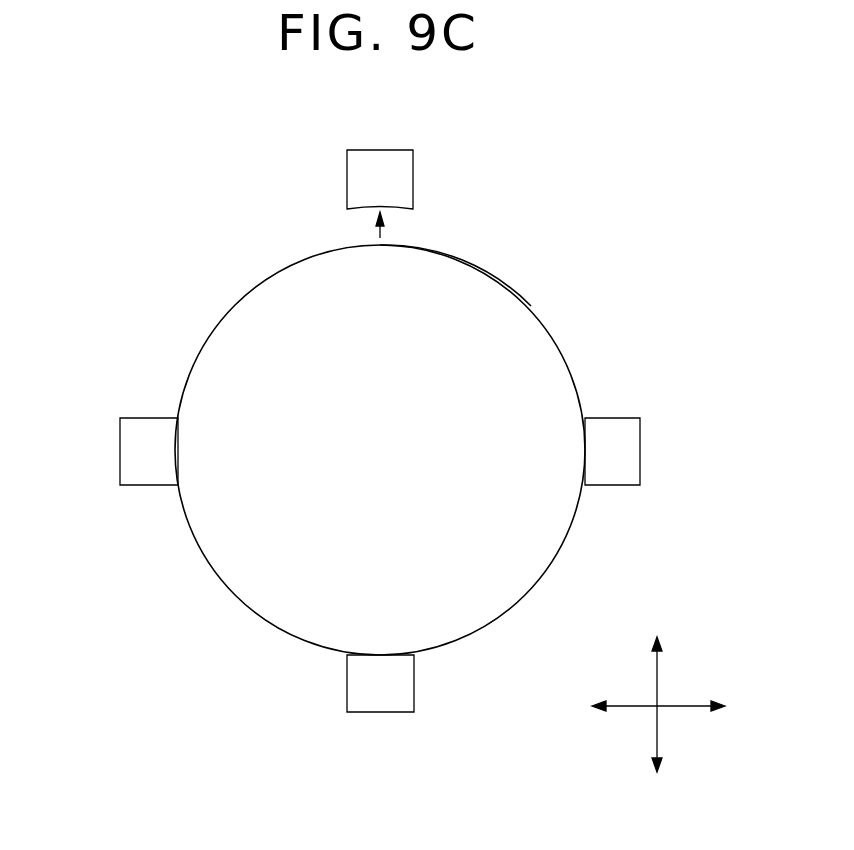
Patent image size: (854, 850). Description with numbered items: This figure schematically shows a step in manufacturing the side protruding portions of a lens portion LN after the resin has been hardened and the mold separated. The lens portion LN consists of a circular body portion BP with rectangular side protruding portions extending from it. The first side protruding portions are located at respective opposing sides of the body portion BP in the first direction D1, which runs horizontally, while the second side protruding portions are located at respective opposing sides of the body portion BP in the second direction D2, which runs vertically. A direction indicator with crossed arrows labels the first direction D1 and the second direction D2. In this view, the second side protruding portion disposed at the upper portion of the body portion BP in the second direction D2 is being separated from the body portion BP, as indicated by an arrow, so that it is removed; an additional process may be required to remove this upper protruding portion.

The body portion BP is at (553, 337).
The lens portion LN is at (476, 290).
The first direction D1 is at (673, 705).
The second direction D2 is at (657, 719).